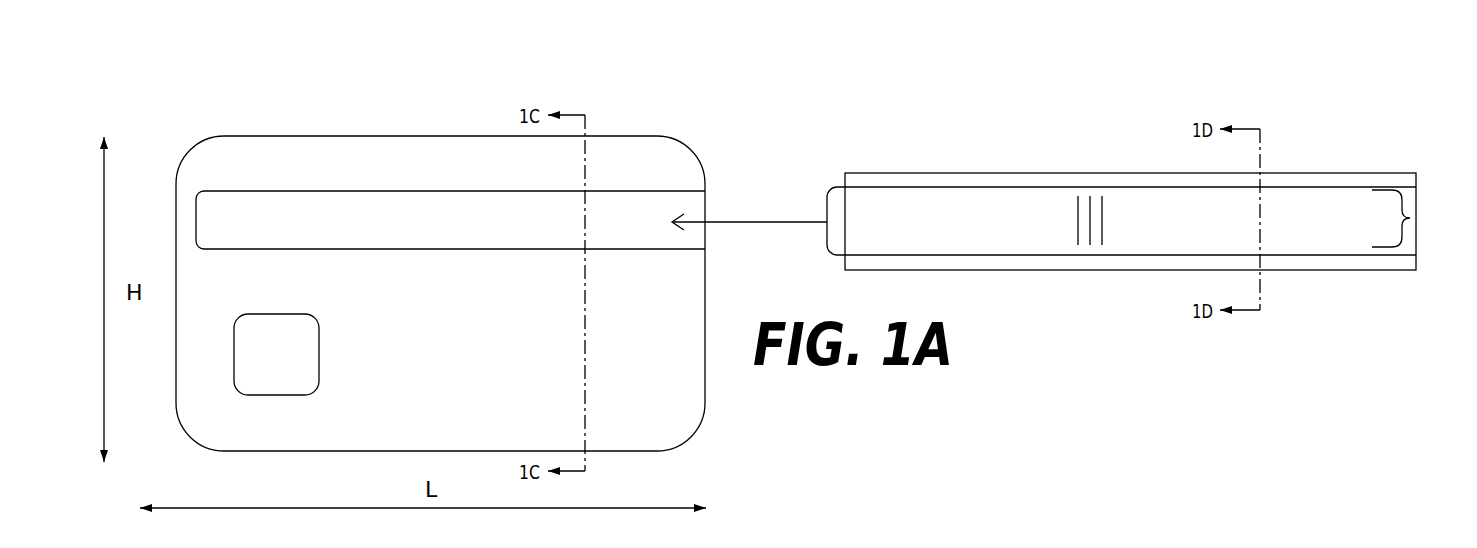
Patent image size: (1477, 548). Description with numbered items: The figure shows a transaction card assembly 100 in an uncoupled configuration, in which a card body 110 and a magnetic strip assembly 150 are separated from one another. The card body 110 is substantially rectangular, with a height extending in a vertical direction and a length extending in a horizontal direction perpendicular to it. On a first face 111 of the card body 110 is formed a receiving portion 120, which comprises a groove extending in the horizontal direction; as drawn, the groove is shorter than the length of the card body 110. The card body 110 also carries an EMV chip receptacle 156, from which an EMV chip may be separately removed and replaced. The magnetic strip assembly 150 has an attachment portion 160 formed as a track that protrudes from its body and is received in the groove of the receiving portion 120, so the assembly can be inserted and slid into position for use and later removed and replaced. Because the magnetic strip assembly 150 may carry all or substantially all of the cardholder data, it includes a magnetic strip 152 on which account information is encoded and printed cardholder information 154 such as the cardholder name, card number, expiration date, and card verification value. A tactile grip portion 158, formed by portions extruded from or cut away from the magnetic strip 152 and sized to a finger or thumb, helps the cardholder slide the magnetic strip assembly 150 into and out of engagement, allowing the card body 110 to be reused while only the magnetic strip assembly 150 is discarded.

The transaction card assembly 100 is at (733, 108).
The card body 110 is at (353, 133).
The first face 111 is at (492, 379).
The receiving portion 120 is at (696, 200).
The magnetic strip assembly 150 is at (1397, 169).
The magnetic strip 152 is at (1059, 197).
The cardholder information 154 is at (1410, 218).
The EMV chip receptacle 156 is at (303, 331).
The tactile grip portion 158 is at (1090, 254).
The attachment portion 160 is at (1003, 170).